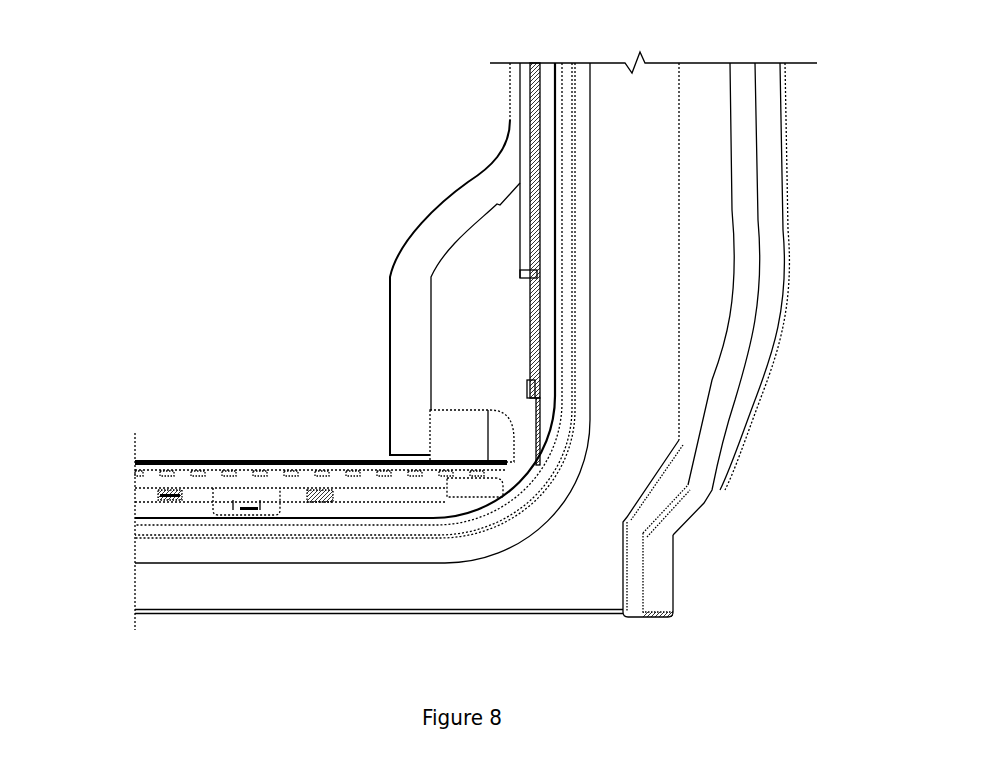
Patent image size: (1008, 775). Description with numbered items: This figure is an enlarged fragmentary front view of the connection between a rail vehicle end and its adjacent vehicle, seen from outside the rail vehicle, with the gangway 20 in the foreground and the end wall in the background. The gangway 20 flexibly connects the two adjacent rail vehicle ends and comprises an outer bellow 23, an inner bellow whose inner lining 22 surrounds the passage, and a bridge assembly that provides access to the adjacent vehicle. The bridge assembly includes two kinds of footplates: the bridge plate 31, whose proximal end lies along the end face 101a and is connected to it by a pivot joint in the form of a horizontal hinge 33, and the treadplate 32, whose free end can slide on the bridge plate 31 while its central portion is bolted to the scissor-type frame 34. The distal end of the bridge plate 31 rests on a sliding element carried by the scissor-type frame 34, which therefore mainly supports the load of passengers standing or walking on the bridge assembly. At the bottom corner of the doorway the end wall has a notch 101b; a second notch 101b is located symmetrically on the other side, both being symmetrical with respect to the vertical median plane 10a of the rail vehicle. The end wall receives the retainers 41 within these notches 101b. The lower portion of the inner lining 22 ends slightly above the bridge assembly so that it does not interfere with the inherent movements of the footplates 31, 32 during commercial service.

The vertical median plane 10a is at (135, 443).
The gangway 20 is at (608, 284).
The inner lining 22 is at (387, 325).
The outer bellow 23 is at (590, 468).
The bridge plate 31 is at (140, 466).
The treadplate 32 is at (195, 460).
The horizontal hinge 33 is at (166, 481).
The scissor-type frame 34 is at (202, 495).
The retainer 41 is at (453, 442).
The end face 101a is at (640, 162).
The notch 101b is at (512, 423).